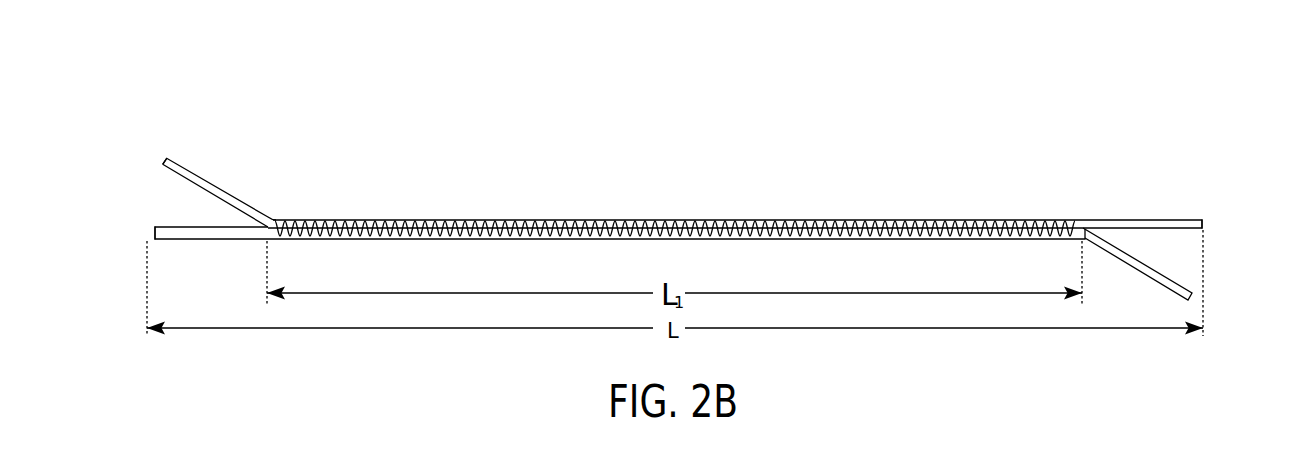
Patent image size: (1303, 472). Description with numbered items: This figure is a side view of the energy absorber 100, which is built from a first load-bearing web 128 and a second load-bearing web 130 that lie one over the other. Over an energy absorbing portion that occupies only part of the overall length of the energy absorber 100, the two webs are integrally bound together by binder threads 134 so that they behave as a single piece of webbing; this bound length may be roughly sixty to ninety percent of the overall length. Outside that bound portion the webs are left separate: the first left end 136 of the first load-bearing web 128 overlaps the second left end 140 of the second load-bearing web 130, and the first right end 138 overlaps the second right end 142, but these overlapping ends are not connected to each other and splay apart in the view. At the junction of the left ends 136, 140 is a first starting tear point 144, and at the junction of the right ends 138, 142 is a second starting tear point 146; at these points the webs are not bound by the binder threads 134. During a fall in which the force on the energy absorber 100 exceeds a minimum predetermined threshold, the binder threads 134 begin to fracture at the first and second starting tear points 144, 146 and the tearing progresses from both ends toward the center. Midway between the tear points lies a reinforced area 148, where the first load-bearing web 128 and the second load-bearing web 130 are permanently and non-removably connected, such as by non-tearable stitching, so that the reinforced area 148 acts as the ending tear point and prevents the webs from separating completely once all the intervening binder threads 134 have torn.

The energy absorber 100 is at (822, 112).
The first load-bearing web 128 is at (142, 218).
The second load-bearing web 130 is at (152, 142).
The binder threads 134 is at (837, 220).
The first left end 136 is at (188, 240).
The first right end 138 is at (1173, 282).
The second left end 140 is at (209, 182).
The second right end 142 is at (1204, 224).
The first starting tear point 144 is at (272, 168).
The second starting tear point 146 is at (1110, 198).
The reinforced area 148 is at (678, 220).